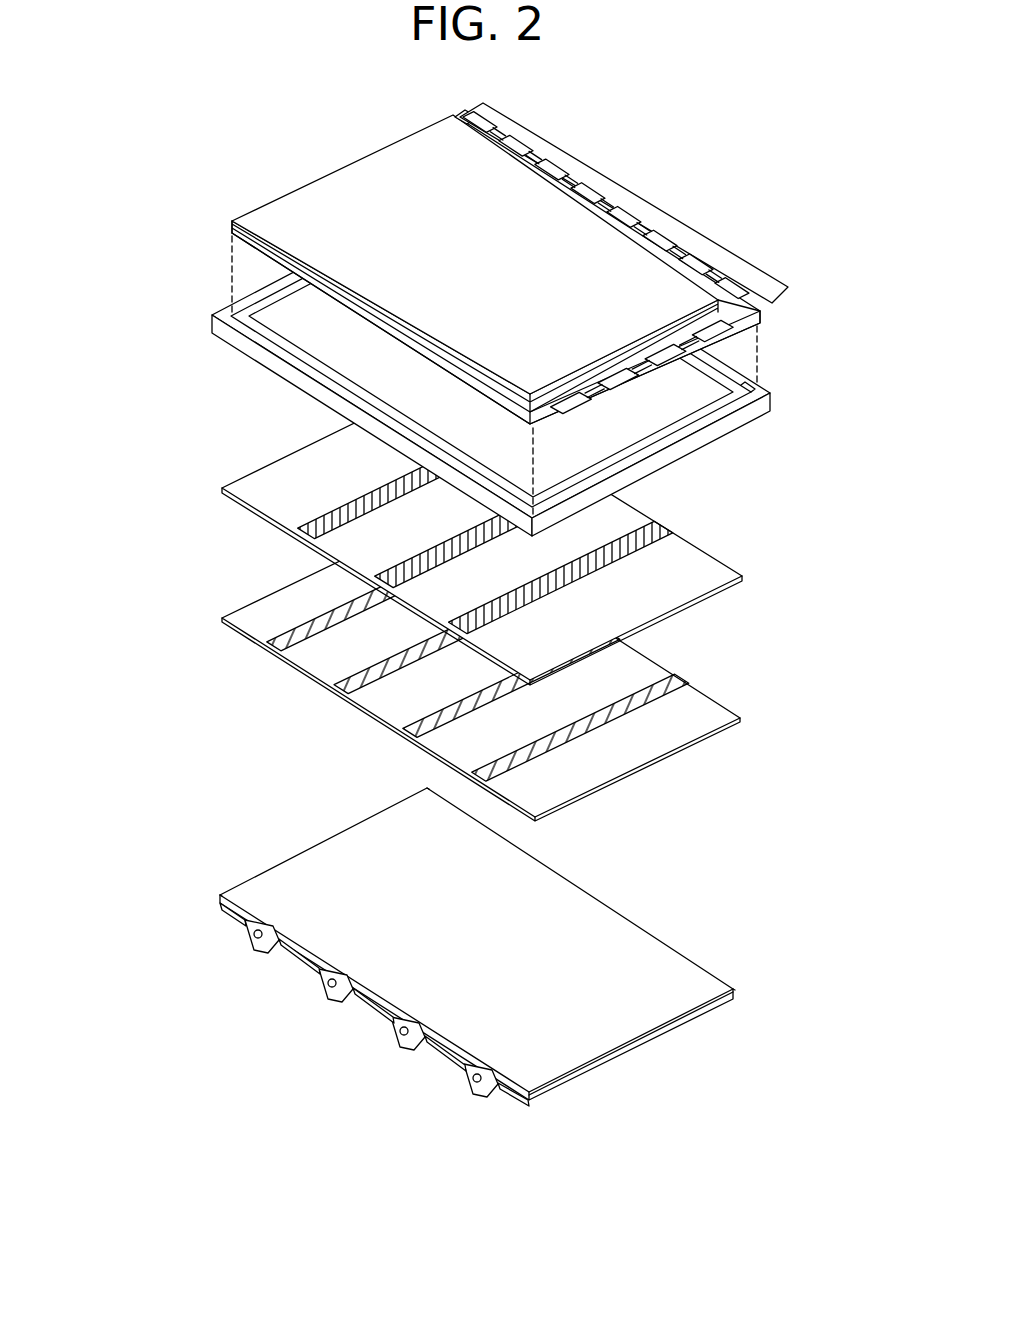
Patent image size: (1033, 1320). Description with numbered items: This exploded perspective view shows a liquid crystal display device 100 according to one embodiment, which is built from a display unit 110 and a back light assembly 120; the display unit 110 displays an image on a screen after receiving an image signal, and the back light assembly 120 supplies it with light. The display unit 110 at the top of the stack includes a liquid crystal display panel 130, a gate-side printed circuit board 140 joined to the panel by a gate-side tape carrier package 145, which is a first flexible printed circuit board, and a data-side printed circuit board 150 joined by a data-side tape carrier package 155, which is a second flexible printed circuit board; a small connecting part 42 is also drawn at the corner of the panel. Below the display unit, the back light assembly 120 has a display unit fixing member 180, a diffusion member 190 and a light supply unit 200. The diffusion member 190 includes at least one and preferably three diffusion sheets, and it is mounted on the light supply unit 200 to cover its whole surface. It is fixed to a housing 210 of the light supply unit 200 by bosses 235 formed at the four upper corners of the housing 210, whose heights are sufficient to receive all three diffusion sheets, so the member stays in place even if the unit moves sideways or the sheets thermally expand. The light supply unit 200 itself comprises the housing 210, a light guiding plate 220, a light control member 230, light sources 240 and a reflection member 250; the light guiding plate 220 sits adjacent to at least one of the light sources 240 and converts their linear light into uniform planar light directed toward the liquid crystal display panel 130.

The liquid crystal display device 100 is at (232, 103).
The display unit 110 is at (341, 157).
The back light assembly 120 is at (145, 980).
The liquid crystal display panel 130 is at (290, 207).
The gate-side printed circuit board 140 is at (560, 273).
The gate-side tape carrier package 145 is at (757, 312).
The data-side printed circuit board 150 is at (624, 192).
The data-side tape carrier package 155 is at (530, 147).
The connector 42 is at (462, 113).
The display unit fixing member 180 is at (708, 471).
The diffusion member 190 is at (647, 767).
The light supply unit 200 is at (503, 954).
The housing 210 is at (622, 1053).
The light guiding plate 220 is at (276, 952).
The light control member 230 is at (342, 1034).
The bosses 235 is at (428, 788).
The light sources 240 is at (473, 1092).
The reflection member 250 is at (233, 920).